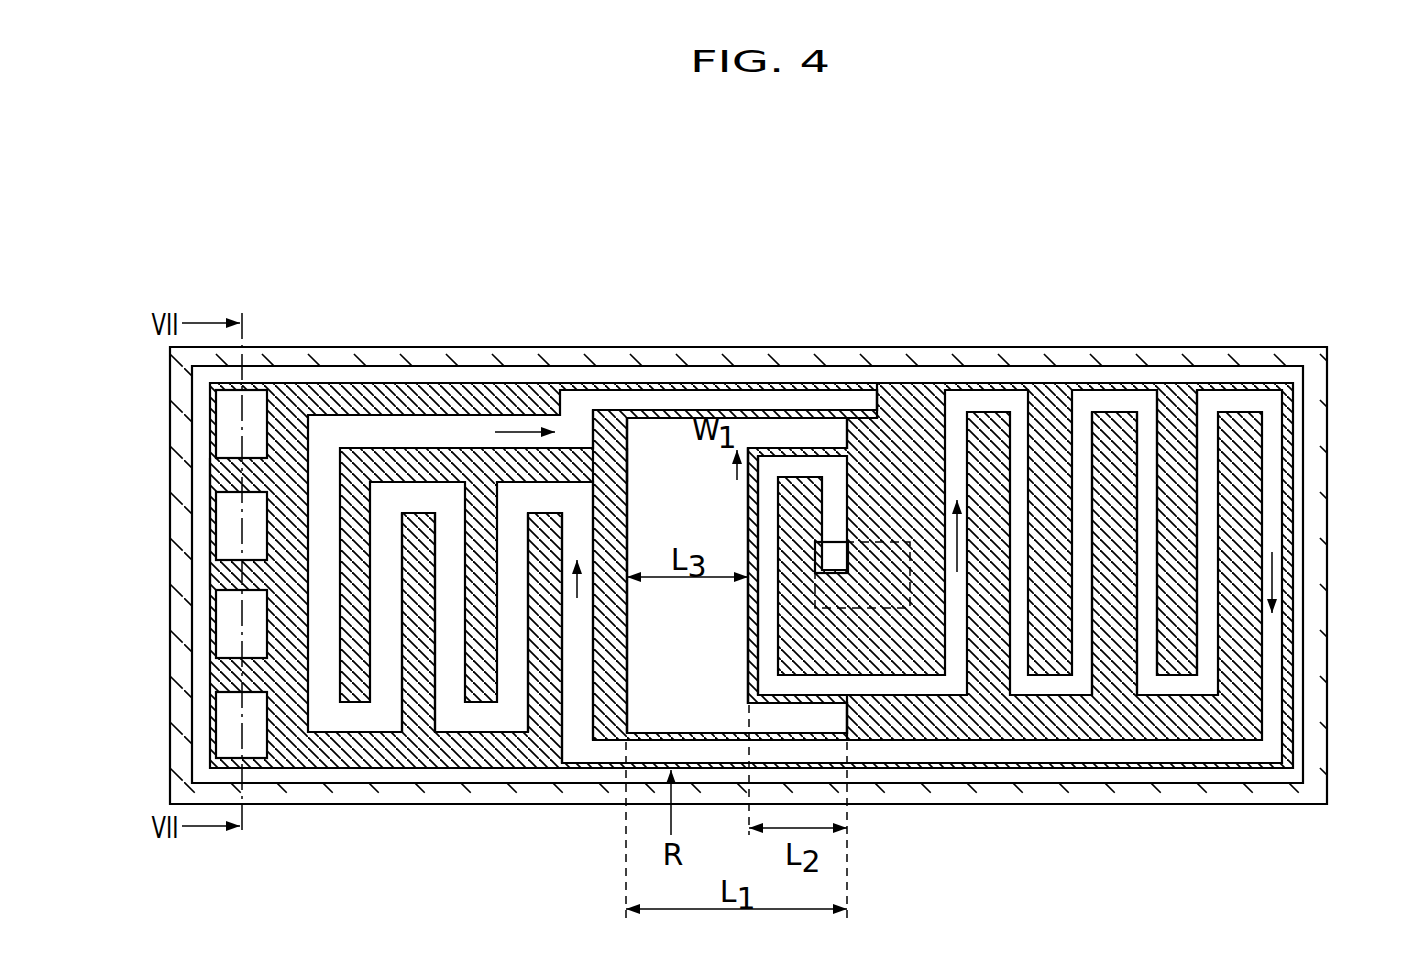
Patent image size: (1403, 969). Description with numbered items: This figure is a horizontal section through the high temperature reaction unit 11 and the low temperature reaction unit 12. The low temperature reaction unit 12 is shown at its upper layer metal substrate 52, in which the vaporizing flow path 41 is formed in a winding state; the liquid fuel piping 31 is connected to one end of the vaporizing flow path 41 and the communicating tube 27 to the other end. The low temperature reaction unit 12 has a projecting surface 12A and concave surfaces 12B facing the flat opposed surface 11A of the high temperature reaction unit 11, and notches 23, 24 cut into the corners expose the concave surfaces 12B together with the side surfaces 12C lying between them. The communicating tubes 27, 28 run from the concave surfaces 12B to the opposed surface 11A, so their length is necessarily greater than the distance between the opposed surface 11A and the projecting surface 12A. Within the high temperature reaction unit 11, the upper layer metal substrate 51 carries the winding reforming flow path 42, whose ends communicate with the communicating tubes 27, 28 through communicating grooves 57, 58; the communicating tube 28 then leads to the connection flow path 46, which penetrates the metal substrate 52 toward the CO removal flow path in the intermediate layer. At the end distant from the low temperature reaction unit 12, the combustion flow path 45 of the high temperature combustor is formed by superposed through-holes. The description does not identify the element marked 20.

The high temperature reaction unit 11 is at (210, 463).
The opposed surface 11A is at (630, 477).
The low temperature reaction unit 12 is at (1288, 557).
The projecting surface 12A is at (748, 540).
The concave surface 12B is at (840, 422).
The side surface 12C is at (790, 448).
The substrate 20 is at (1322, 360).
The notch 23 is at (810, 727).
The notch 24 is at (803, 428).
The communicating tube 27 is at (700, 772).
The communicating tube 28 is at (738, 380).
The liquid fuel piping 31 is at (832, 550).
The vaporizing flow path 41 is at (1117, 402).
The reforming flow path 42 is at (437, 427).
The combustion flow path 45 is at (210, 520).
The connection flow path 46 is at (860, 388).
The upper layer metal substrate 51 is at (415, 700).
The upper layer metal substrate 52 is at (1180, 403).
The communicating groove 57 is at (592, 750).
The communicating groove 58 is at (598, 400).